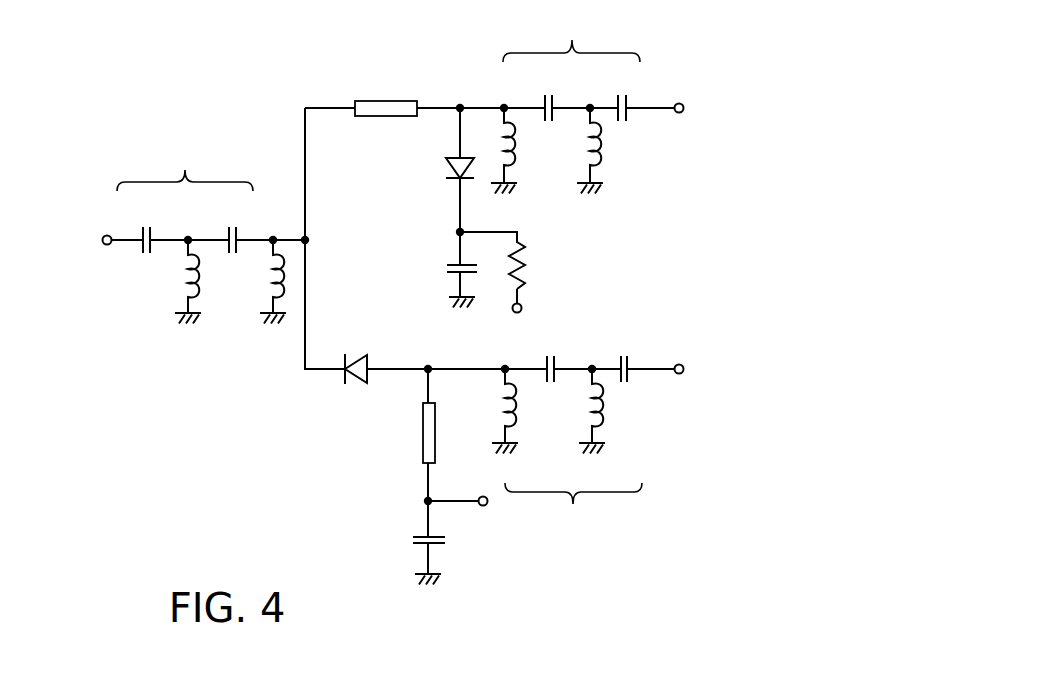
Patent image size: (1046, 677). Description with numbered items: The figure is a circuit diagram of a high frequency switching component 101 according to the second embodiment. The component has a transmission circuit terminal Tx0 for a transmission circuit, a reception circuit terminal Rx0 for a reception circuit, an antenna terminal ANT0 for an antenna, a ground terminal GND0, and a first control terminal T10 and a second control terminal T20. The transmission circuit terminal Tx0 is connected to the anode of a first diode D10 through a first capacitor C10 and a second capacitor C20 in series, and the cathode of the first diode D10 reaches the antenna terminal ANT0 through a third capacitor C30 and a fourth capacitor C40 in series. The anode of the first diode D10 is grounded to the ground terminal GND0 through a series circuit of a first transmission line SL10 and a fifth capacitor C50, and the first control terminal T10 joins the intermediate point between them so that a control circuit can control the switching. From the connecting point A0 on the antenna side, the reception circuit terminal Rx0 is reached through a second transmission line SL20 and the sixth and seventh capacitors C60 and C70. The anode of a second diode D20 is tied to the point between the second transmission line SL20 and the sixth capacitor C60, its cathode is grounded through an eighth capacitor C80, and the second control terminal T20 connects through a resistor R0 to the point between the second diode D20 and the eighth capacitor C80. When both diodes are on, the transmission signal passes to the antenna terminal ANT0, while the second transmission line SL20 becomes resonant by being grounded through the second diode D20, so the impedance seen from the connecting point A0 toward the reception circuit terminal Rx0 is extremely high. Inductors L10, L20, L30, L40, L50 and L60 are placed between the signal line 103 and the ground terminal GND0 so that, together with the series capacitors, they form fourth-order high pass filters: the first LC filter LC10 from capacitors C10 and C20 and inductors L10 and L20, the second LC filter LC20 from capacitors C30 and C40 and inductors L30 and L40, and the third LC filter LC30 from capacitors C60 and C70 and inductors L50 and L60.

The high frequency switching component 101 is at (230, 54).
The signal line 103 is at (121, 246).
The fourth capacitor C40 is at (144, 223).
The third capacitor C30 is at (229, 223).
The sixth capacitor C60 is at (545, 91).
The seventh capacitor C70 is at (617, 91).
The second capacitor C20 is at (547, 356).
The first capacitor C10 is at (624, 356).
The eighth capacitor C80 is at (439, 270).
The fifth capacitor C50 is at (406, 543).
The fourth inductor L40 is at (171, 277).
The third inductor L30 is at (257, 277).
The fifth inductor L50 is at (529, 145).
The sixth inductor L60 is at (615, 145).
The second inductor L20 is at (529, 406).
The first inductor L10 is at (618, 406).
The ground terminal GND0 is at (390, 398).
The second transmission line SL20 is at (386, 95).
The first transmission line SL10 is at (398, 433).
The second diode D20 is at (435, 173).
The first diode D10 is at (350, 352).
The resistor R0 is at (539, 265).
The connecting point A0 is at (322, 240).
The antenna terminal ANT0 is at (77, 240).
The reception circuit terminal Rx0 is at (703, 108).
The transmission circuit terminal Tx0 is at (703, 368).
The second control terminal T20 is at (543, 310).
The first control terminal T10 is at (503, 509).
The second LC filter LC20 is at (185, 167).
The third LC filter LC30 is at (571, 37).
The first LC filter LC10 is at (573, 510).